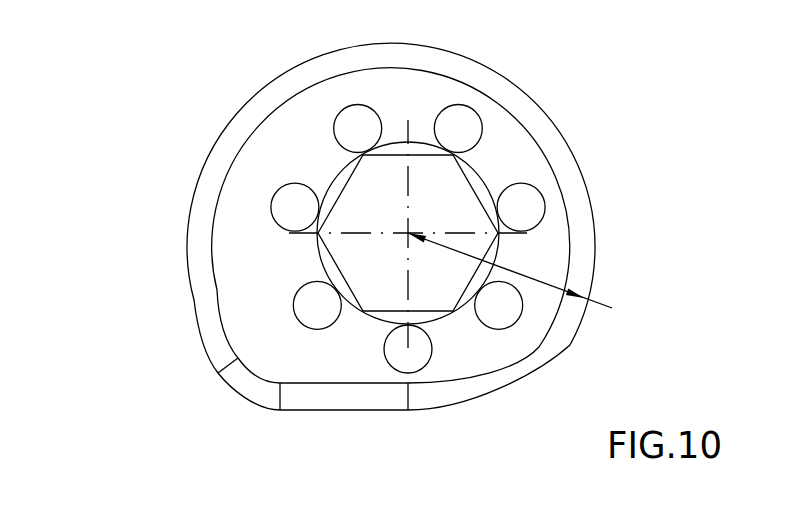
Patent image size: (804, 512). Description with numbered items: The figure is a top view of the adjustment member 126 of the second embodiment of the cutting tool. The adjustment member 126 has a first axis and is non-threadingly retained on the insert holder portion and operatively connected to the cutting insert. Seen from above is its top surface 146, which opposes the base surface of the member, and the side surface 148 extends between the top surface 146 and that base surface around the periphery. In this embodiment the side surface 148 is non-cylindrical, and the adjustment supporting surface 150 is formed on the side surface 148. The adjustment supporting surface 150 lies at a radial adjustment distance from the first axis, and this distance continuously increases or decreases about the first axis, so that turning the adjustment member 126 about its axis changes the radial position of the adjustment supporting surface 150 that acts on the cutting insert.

The adjustment member 126 is at (403, 224).
The top surface 146 is at (260, 263).
The side surface 148 is at (568, 140).
The adjustment supporting surface 150 is at (593, 215).